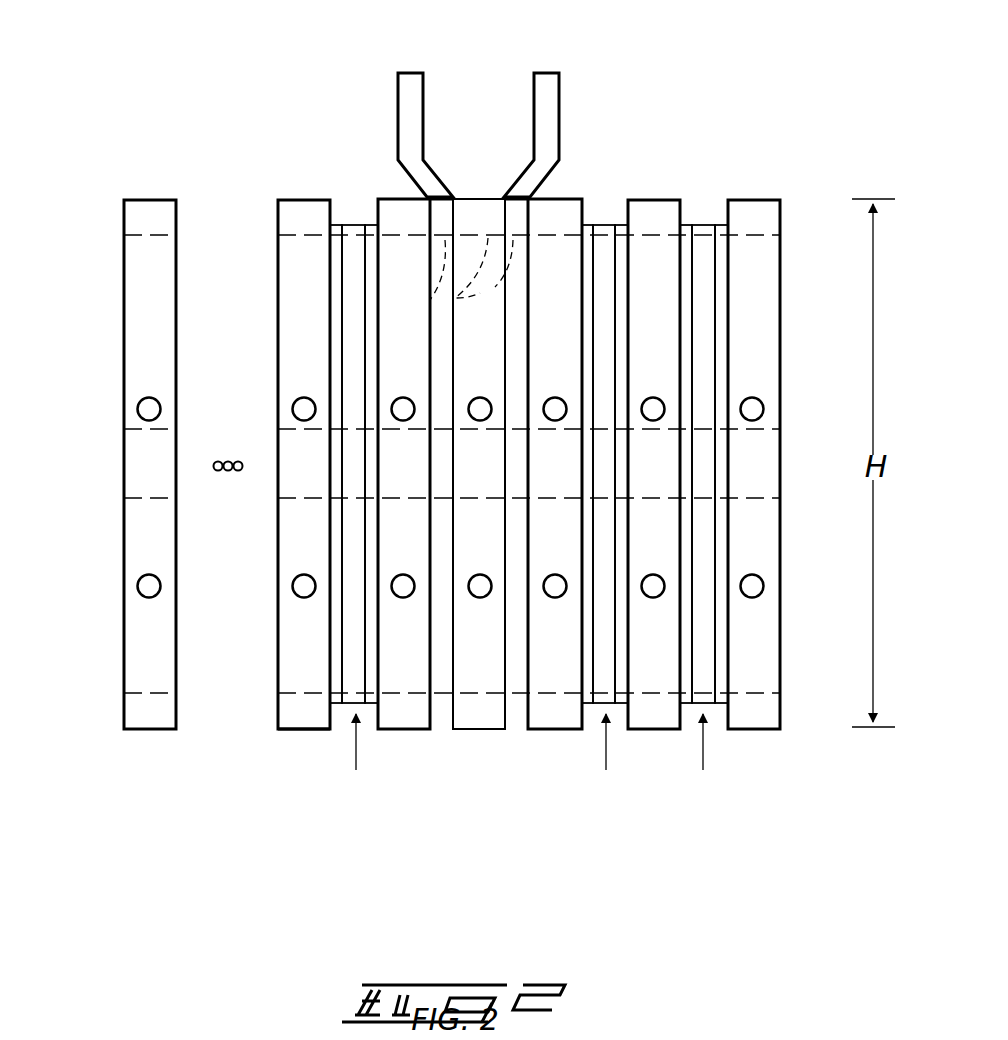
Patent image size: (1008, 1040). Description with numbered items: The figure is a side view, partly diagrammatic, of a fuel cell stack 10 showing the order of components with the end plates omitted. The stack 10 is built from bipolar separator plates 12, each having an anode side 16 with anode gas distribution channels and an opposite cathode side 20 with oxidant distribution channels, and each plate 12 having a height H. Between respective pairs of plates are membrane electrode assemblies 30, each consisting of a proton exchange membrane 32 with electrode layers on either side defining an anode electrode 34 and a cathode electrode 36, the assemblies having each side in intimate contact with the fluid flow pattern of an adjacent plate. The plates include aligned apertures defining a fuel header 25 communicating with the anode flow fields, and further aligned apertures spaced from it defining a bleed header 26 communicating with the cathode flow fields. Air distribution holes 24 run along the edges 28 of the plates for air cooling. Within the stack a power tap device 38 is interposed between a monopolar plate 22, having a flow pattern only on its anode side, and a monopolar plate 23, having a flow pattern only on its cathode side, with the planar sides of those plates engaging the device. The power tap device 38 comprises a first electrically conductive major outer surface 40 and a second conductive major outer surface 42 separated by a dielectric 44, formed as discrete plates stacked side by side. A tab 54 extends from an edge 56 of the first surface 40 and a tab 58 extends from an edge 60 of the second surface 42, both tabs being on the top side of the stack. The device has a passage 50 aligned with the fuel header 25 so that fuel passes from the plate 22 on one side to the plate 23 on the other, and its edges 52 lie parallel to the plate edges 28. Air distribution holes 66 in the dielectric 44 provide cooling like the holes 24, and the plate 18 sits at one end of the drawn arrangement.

The fuel cell stack 10 is at (682, 95).
The bipolar separator plate 12 is at (147, 200).
The anode side 16 is at (783, 287).
The first plate 18 is at (273, 730).
The cathode side 20 is at (130, 325).
The monopolar plate 22 is at (555, 198).
The monopolar plate 23 is at (403, 197).
The air distribution holes 24 is at (136, 410).
The fuel header 25 is at (130, 238).
The bleed header 26 is at (767, 497).
The edges 28 is at (630, 730).
The membrane electrode assembly 30 is at (530, 760).
The proton exchange membrane 32 is at (360, 360).
The anode electrode 34 is at (333, 352).
The cathode electrode 36 is at (372, 308).
The power tap device 38 is at (484, 438).
The first major outer surface 40 is at (427, 729).
The second major outer surface 42 is at (530, 713).
The dielectric 44 is at (483, 197).
The passage 50 is at (442, 297).
The edges 52 is at (440, 537).
The tab 54 is at (410, 73).
The edge 56 is at (440, 200).
The tab 58 is at (556, 74).
The edge 60 is at (513, 200).
The air distribution holes 66 is at (480, 408).